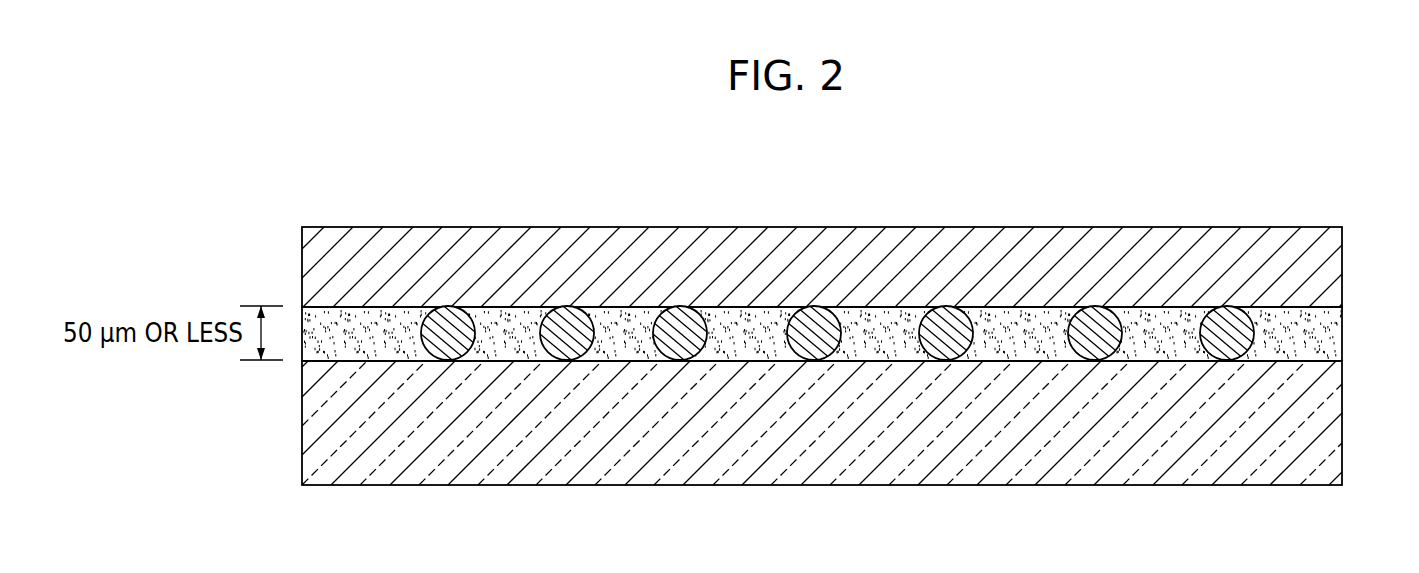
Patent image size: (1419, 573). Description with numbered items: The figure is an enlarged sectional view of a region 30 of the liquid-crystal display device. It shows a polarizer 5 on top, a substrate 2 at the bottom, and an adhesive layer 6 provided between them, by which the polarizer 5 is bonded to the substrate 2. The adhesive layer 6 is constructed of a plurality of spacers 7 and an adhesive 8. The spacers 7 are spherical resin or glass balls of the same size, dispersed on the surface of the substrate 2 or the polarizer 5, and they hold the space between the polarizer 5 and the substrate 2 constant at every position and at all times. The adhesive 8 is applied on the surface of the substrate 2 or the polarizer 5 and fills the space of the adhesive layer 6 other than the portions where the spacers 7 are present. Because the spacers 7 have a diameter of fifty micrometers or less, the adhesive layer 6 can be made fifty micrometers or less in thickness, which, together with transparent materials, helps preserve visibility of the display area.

The region 30 is at (805, 147).
The polarizer 5 is at (1315, 279).
The adhesive layer 6 is at (859, 271).
The spacers 7 is at (1233, 322).
The adhesive 8 is at (1148, 316).
The substrate 2 is at (1305, 433).